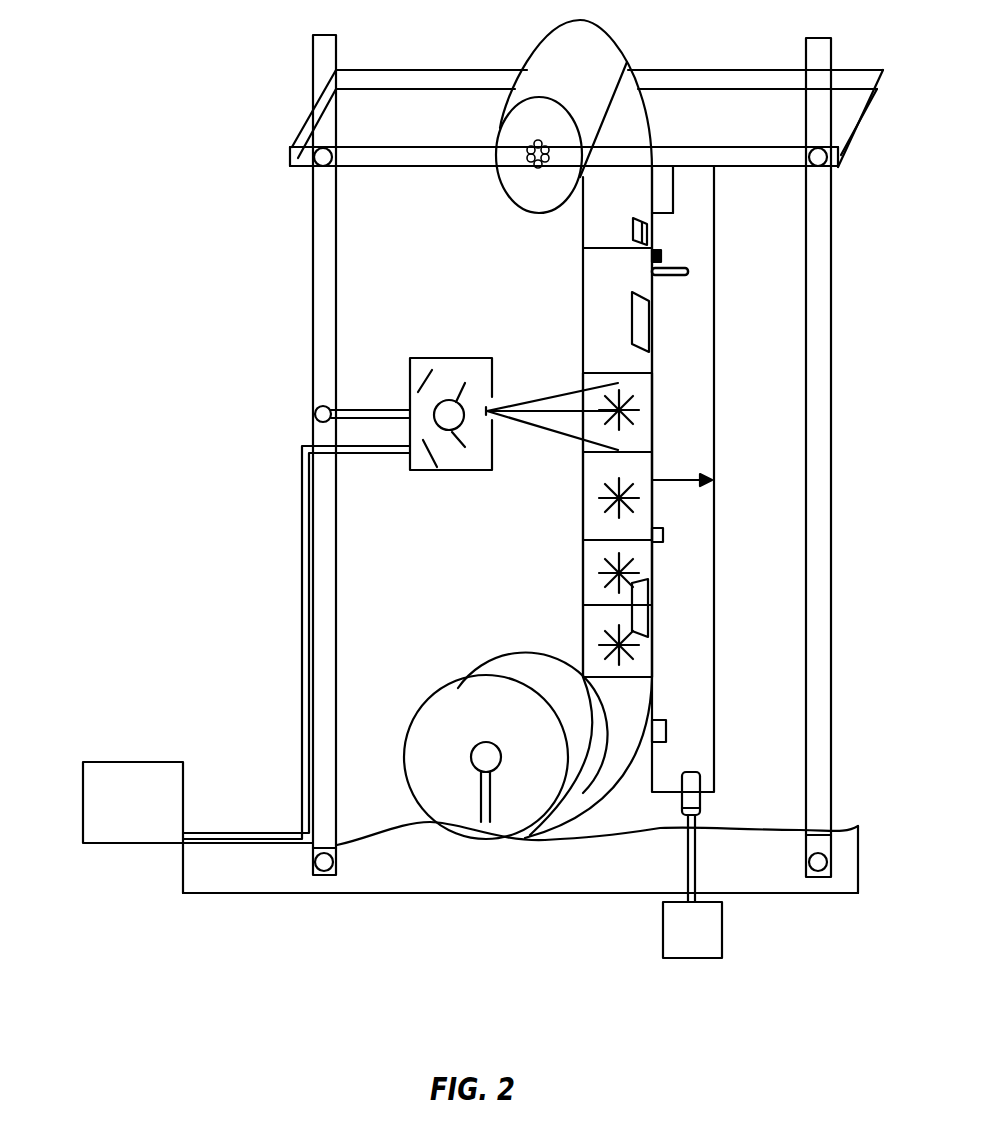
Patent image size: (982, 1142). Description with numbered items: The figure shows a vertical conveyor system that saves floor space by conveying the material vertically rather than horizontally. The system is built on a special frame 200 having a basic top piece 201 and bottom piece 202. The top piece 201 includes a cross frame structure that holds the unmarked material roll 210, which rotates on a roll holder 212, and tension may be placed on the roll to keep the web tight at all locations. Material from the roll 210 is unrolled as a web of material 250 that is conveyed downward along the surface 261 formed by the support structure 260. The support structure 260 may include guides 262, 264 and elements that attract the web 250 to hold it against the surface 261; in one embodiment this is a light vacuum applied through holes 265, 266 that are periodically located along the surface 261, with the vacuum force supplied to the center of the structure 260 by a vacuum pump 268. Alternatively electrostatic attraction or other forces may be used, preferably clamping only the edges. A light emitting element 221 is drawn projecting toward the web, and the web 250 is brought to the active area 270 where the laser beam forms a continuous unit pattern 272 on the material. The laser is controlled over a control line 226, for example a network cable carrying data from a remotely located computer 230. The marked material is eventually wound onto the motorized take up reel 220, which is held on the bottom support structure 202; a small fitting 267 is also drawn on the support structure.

The frame 200 is at (287, 882).
The top piece 201 is at (290, 165).
The bottom piece 202 is at (178, 880).
The material roll 210 is at (595, 46).
The roll holder 212 is at (524, 208).
The take up reel 220 is at (447, 690).
The light source 221 is at (418, 358).
The control line 226 is at (398, 457).
The computer 230 is at (118, 762).
The web of material 250 is at (635, 141).
The support structure 260 is at (676, 206).
The surface 261 is at (655, 233).
The guide 262 is at (645, 322).
The guide 264 is at (648, 605).
The hole 265 is at (662, 261).
The hole 266 is at (664, 536).
The sensor 267 is at (667, 731).
The vacuum pump 268 is at (722, 933).
The active area 270 is at (650, 390).
The unit pattern 272 is at (600, 380).